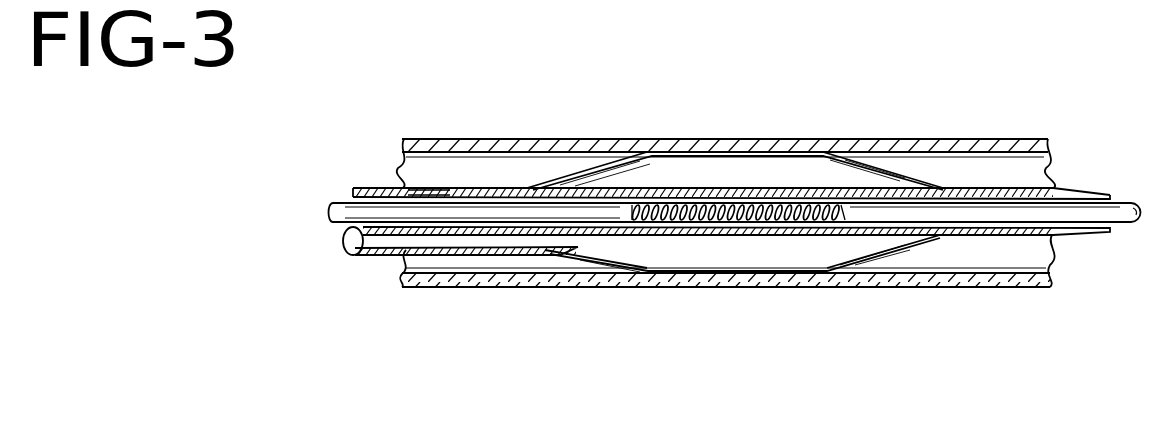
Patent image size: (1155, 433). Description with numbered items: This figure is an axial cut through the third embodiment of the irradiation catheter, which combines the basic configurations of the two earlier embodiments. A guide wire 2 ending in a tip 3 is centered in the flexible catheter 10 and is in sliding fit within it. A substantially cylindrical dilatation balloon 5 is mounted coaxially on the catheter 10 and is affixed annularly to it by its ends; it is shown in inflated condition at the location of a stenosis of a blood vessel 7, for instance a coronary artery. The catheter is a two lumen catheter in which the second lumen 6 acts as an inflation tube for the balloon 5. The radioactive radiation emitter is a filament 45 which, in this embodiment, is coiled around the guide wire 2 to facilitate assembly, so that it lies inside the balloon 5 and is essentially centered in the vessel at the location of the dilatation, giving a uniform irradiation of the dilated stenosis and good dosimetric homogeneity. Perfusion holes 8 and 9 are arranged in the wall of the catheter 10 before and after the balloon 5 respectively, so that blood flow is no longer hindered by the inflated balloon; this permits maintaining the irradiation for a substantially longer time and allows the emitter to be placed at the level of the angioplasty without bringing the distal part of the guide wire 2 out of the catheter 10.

The guide wire 2 is at (482, 203).
The tip 3 is at (1130, 200).
The dilatation balloon 5 is at (578, 245).
The second lumen 6 is at (393, 240).
The blood vessel 7 is at (803, 150).
The hole 8 is at (428, 196).
The hole 9 is at (1036, 190).
The catheter 10 is at (608, 189).
The filament 45 is at (714, 203).